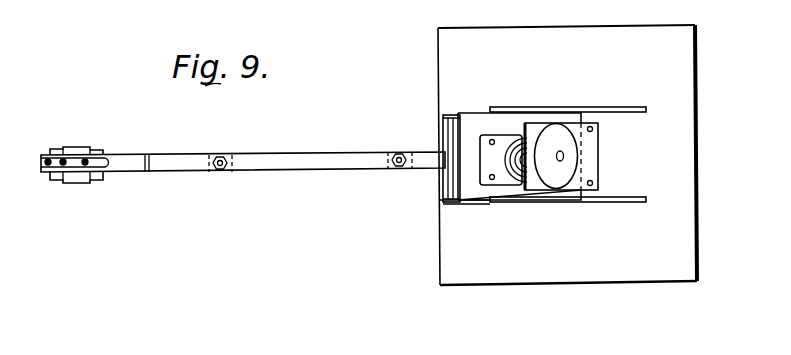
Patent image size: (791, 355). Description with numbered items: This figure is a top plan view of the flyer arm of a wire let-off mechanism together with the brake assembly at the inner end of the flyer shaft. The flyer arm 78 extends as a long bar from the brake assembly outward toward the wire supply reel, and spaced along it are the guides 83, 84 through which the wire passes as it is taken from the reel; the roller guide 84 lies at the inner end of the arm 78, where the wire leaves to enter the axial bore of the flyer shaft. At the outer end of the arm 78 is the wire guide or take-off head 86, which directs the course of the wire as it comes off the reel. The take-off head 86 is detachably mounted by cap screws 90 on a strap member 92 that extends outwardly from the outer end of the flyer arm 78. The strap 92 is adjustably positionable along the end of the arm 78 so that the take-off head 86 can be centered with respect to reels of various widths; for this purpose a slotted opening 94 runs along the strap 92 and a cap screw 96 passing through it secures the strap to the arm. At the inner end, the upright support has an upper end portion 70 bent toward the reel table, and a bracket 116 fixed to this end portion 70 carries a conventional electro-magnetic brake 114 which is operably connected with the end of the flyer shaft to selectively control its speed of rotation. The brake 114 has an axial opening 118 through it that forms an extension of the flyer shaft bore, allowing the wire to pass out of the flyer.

The upper end portion 70 is at (470, 197).
The flyer arm 78 is at (297, 172).
The guide 83 is at (210, 172).
The guide 84 is at (388, 152).
The take-off head 86 is at (83, 191).
The cap screws 90 is at (63, 158).
The strap member 92 is at (125, 172).
The slotted opening 94 is at (97, 161).
The cap screw 96 is at (85, 158).
The electro-magnetic brake 114 is at (562, 190).
The bracket 116 is at (598, 171).
The axial opening 118 is at (565, 155).